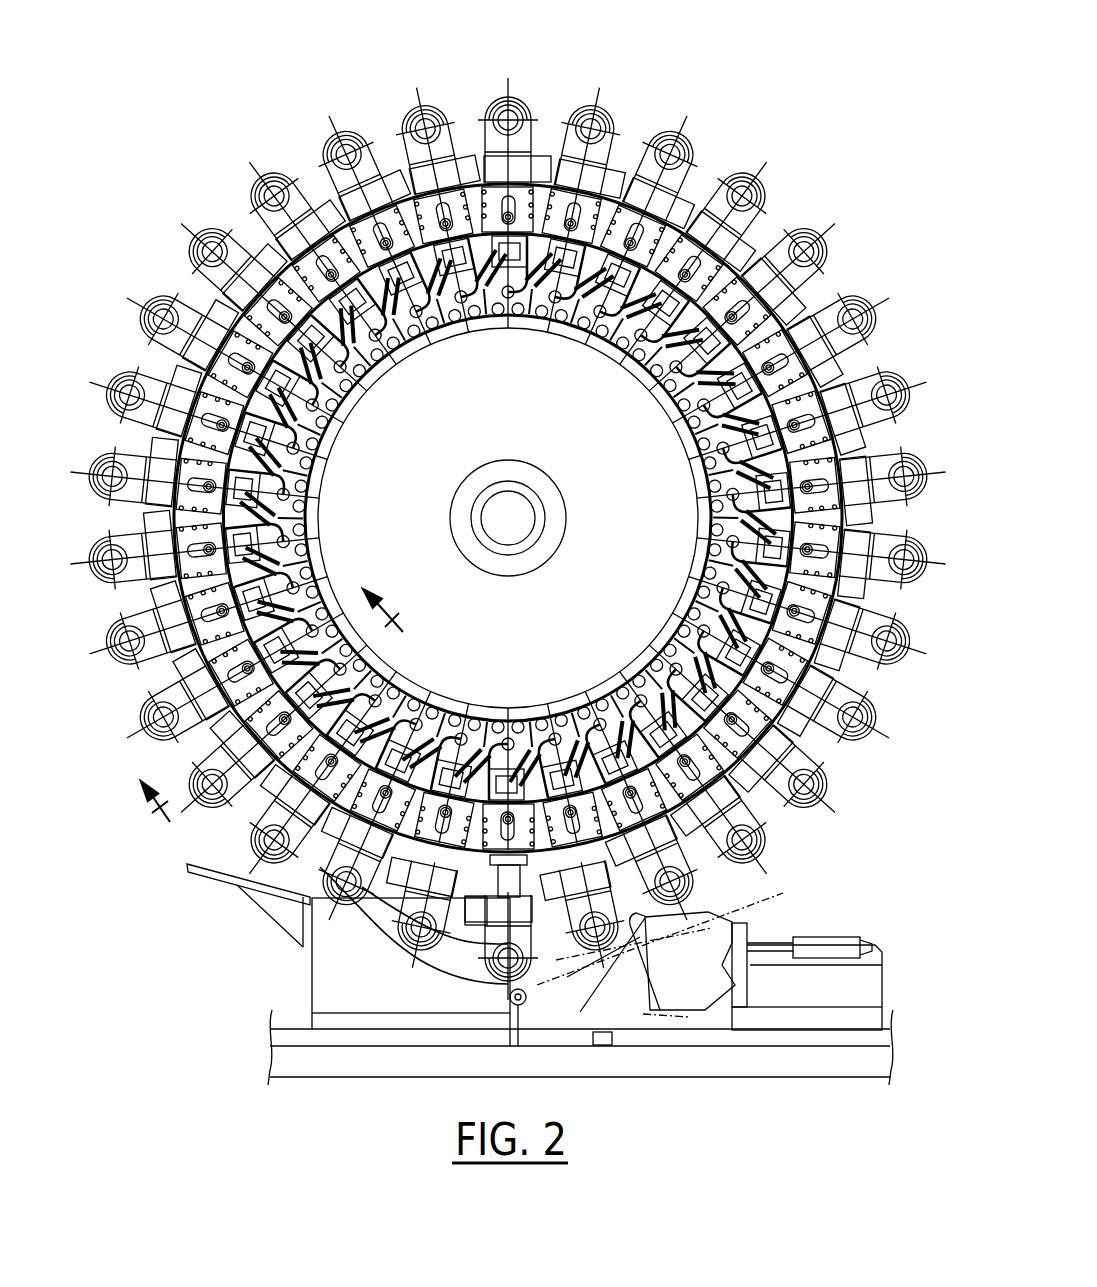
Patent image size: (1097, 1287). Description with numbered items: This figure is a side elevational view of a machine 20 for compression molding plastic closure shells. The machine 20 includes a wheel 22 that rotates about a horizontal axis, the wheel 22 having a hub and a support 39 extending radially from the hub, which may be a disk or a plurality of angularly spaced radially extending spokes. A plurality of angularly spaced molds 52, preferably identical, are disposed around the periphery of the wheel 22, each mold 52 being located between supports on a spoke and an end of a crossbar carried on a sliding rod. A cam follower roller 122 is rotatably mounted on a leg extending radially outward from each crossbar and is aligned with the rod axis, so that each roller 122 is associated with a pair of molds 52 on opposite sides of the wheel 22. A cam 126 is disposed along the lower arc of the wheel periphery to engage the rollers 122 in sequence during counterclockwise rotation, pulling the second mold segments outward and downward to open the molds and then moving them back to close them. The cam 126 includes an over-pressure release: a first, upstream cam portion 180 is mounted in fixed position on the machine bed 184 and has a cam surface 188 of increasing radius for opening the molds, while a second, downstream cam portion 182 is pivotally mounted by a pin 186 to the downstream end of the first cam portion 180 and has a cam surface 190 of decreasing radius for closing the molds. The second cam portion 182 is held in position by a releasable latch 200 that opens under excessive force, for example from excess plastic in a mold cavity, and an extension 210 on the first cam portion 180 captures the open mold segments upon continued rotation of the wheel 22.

The machine 20 is at (508, 573).
The wheel 22 is at (508, 526).
The support 39 is at (622, 581).
The molds 52 is at (617, 859).
The cam follower roller 122 is at (616, 116).
The cam 126 is at (322, 997).
The first cam portion 180 is at (368, 997).
The second cam portion 182 is at (615, 990).
The machine bed 184 is at (818, 1058).
The pin 186 is at (520, 1005).
The cam surface 188 is at (380, 907).
The cam surface 190 is at (680, 1015).
The releasable latch 200 is at (838, 907).
The extension 210 is at (212, 878).